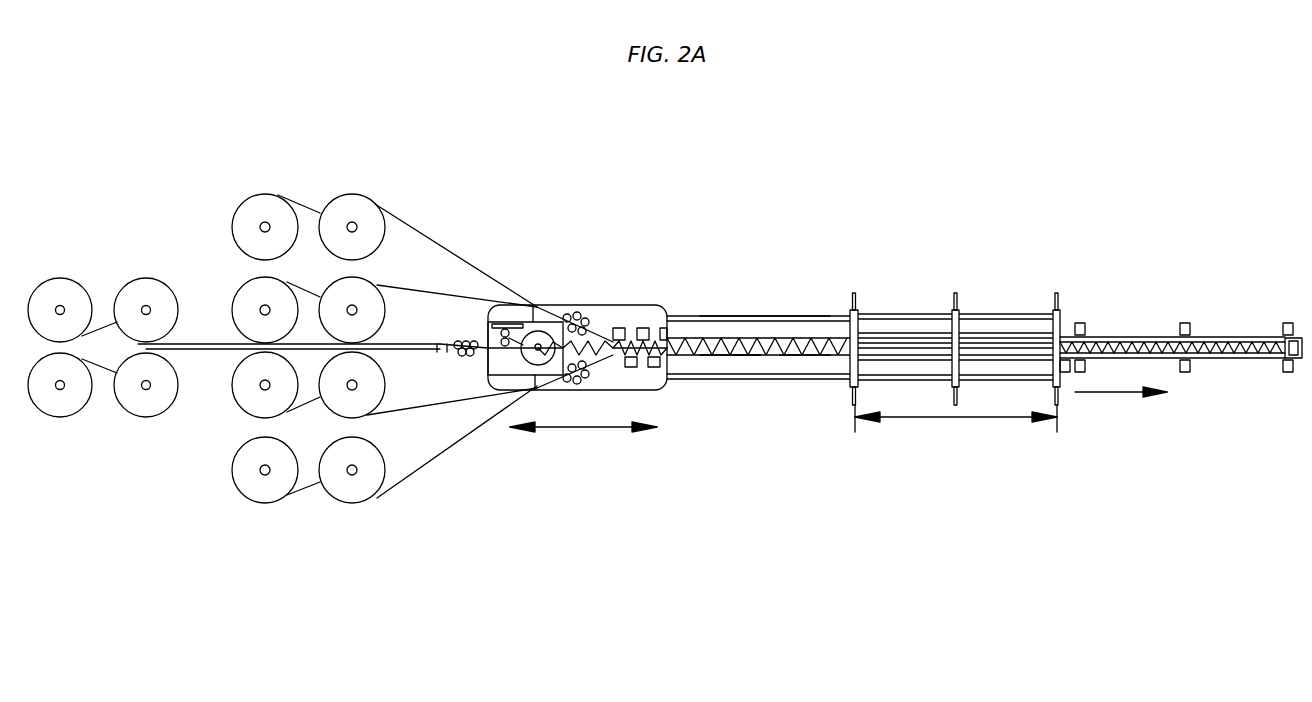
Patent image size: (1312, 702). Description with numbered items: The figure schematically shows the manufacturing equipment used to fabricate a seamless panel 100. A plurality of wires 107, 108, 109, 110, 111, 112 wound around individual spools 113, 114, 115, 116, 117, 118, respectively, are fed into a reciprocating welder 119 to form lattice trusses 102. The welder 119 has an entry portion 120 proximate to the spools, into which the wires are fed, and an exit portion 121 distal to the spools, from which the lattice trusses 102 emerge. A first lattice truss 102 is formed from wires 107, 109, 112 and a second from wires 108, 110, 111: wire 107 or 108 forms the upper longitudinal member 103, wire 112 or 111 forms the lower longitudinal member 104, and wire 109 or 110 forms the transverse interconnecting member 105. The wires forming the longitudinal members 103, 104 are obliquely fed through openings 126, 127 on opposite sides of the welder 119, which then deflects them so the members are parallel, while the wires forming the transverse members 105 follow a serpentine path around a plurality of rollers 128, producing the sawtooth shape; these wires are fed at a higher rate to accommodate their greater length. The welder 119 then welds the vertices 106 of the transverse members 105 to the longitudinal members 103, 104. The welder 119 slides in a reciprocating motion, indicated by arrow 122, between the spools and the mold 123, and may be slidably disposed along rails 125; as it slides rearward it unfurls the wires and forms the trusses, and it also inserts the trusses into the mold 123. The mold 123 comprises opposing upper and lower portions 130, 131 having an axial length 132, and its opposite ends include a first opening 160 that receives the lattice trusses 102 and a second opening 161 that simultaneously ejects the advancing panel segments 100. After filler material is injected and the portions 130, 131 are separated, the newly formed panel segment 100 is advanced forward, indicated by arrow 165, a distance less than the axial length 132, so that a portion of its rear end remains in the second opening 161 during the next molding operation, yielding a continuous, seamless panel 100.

The seamless panel 100 is at (1153, 336).
The lattice truss 102 is at (800, 322).
The upper longitudinal member 103 is at (760, 340).
The lower longitudinal member 104 is at (737, 357).
The transverse interconnecting member 105 is at (742, 357).
The vertices 106 is at (797, 355).
The wire 107 is at (352, 227).
The wire 108 is at (352, 310).
The wire 109 is at (205, 344).
The wire 110 is at (205, 349).
The wire 111 is at (352, 385).
The wire 112 is at (352, 470).
The spool 113 is at (401, 216).
The spool 114 is at (430, 290).
The spool 115 is at (146, 310).
The spool 116 is at (146, 385).
The spool 117 is at (427, 407).
The spool 118 is at (352, 470).
The reciprocating welder 119 is at (660, 275).
The entry portion 120 is at (487, 353).
The exit portion 121 is at (682, 316).
The arrow 122 is at (583, 428).
The mold 123 is at (978, 288).
The rails 125 is at (695, 321).
The opening 126 is at (540, 320).
The opening 127 is at (535, 390).
The rollers 128 is at (533, 307).
The upper portion 130 is at (992, 325).
The lower portion 131 is at (1002, 368).
The axial length 132 is at (955, 420).
The first opening 160 is at (856, 294).
The second opening 161 is at (1063, 330).
The arrow 165 is at (1117, 392).